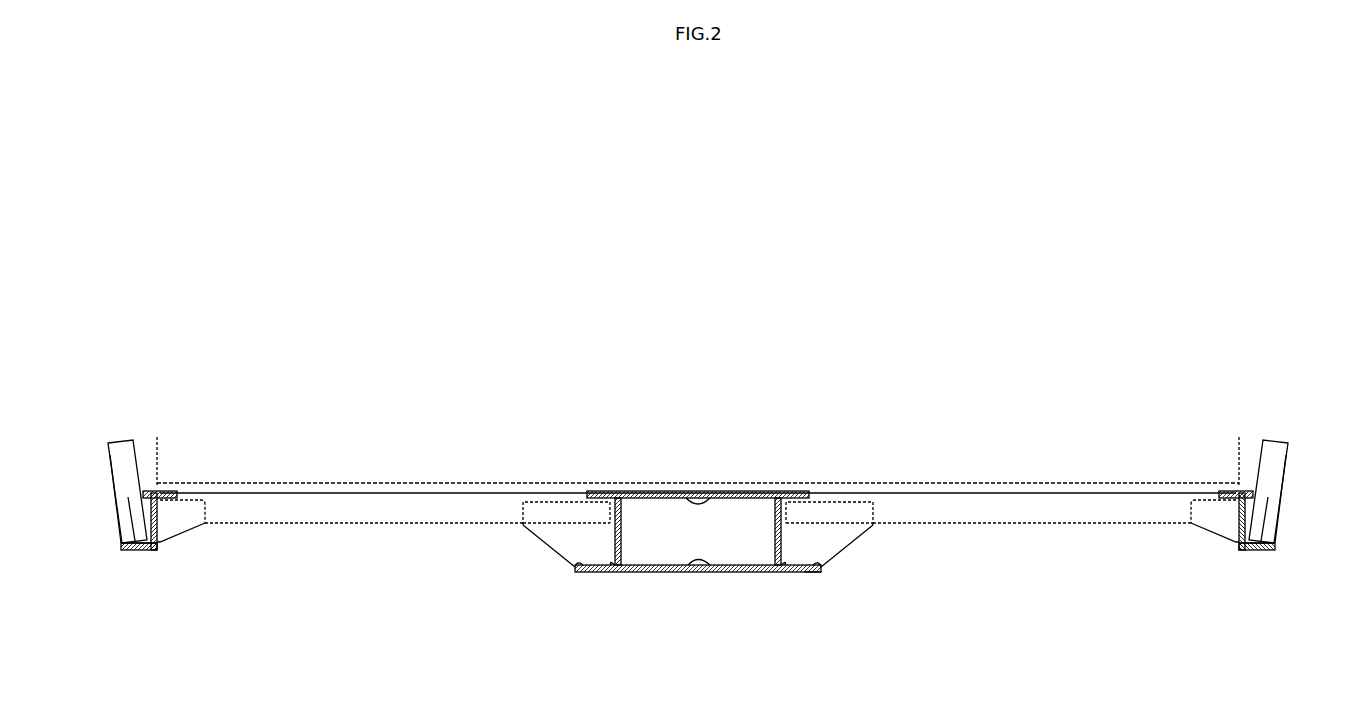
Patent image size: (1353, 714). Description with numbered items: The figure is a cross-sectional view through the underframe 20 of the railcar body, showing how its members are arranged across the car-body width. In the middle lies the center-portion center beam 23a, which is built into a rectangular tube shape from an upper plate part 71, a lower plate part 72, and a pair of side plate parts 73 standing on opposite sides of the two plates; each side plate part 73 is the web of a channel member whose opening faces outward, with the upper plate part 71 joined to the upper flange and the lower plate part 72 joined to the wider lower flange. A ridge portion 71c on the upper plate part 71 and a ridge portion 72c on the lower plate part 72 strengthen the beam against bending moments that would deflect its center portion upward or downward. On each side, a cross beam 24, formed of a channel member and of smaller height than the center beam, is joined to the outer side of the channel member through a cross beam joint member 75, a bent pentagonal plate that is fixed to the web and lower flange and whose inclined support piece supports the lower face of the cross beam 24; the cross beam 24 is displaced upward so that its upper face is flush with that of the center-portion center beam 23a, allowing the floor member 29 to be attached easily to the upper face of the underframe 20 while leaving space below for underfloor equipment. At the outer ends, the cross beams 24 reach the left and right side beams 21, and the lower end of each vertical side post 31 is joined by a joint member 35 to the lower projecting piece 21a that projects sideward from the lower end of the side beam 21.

The underframe 20 is at (712, 384).
The side beam 21 is at (153, 560).
The lower projecting piece 21a is at (130, 555).
The center-portion center beam 23a is at (781, 582).
The cross beam 24 is at (351, 524).
The floor member 29 is at (700, 496).
The side post 31 is at (125, 442).
The joint member 35 is at (118, 502).
The upper plate part 71 is at (728, 506).
The ridge portion 71c is at (700, 503).
The lower plate part 72 is at (724, 582).
The ridge portion 72c is at (695, 568).
The side plate part 73 is at (630, 531).
The cross beam joint member 75 is at (552, 535).